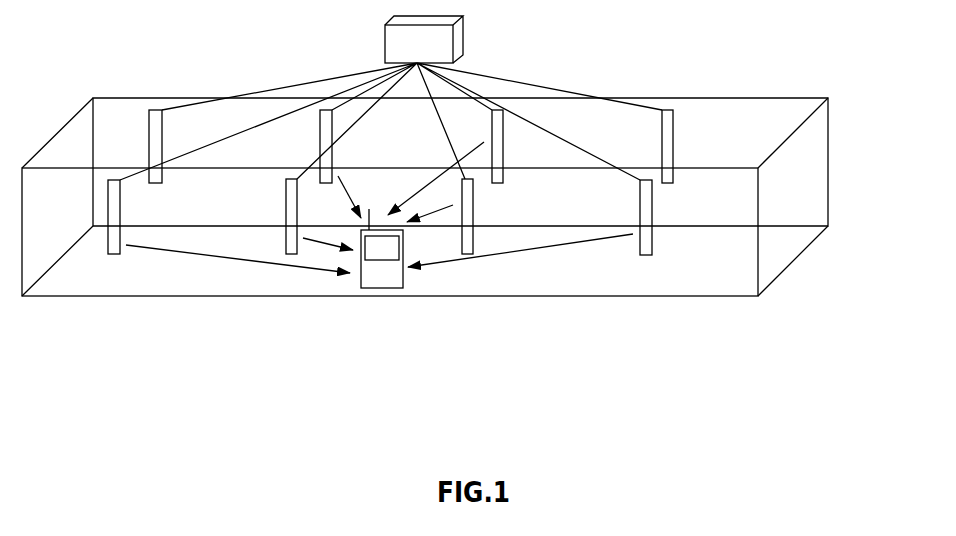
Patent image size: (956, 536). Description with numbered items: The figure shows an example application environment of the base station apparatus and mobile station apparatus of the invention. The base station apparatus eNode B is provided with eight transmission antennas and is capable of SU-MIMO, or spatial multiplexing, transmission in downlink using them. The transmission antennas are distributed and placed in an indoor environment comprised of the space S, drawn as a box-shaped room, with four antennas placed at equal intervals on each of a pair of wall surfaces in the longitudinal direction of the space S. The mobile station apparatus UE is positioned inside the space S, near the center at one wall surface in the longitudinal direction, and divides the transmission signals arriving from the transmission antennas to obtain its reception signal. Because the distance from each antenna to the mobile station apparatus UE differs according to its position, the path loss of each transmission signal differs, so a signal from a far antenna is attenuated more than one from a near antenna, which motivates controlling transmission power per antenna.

The space S is at (829, 132).
The base station apparatus eNode B is at (391, 98).
The mobile station apparatus UE is at (410, 251).